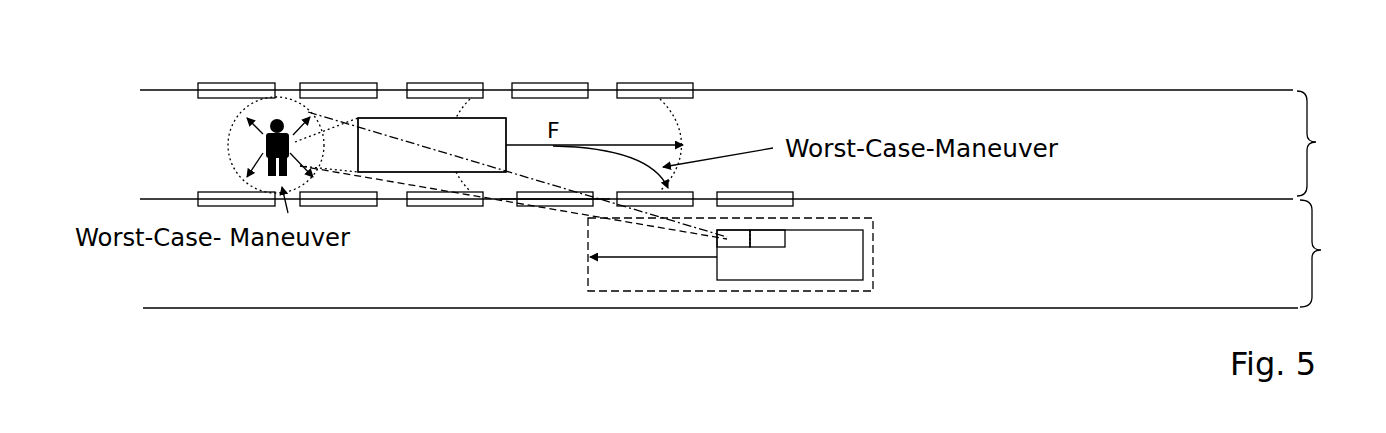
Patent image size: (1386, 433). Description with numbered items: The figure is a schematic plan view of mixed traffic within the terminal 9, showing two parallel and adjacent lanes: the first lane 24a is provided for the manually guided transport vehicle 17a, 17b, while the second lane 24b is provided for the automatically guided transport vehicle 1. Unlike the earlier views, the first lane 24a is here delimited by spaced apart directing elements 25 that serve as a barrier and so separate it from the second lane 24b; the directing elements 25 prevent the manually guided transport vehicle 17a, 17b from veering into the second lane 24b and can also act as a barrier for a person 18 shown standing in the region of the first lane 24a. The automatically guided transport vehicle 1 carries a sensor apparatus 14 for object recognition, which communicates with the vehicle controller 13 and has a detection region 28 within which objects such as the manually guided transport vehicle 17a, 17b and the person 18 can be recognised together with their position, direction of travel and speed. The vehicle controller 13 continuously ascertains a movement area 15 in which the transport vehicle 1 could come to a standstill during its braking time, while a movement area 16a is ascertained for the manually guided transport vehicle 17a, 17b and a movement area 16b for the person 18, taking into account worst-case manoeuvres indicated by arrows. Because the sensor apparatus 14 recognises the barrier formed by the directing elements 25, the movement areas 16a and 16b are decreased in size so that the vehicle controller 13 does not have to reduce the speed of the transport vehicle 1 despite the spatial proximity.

The automatically guided transport vehicle 1 is at (823, 265).
The terminal 9 is at (1204, 150).
The vehicle controller 13 is at (767, 248).
The sensor apparatus 14 is at (730, 248).
The movement area 15 is at (662, 270).
The movement area 16a is at (623, 112).
The movement area 16b is at (245, 132).
The manually guided transport vehicle 17a is at (419, 128).
The manually guided transport vehicle 17b is at (432, 145).
The person 18 is at (263, 150).
The first lane 24a is at (1337, 143).
The second lane 24b is at (1339, 253).
The directing elements 25 is at (334, 100).
The detection region 28 is at (603, 210).